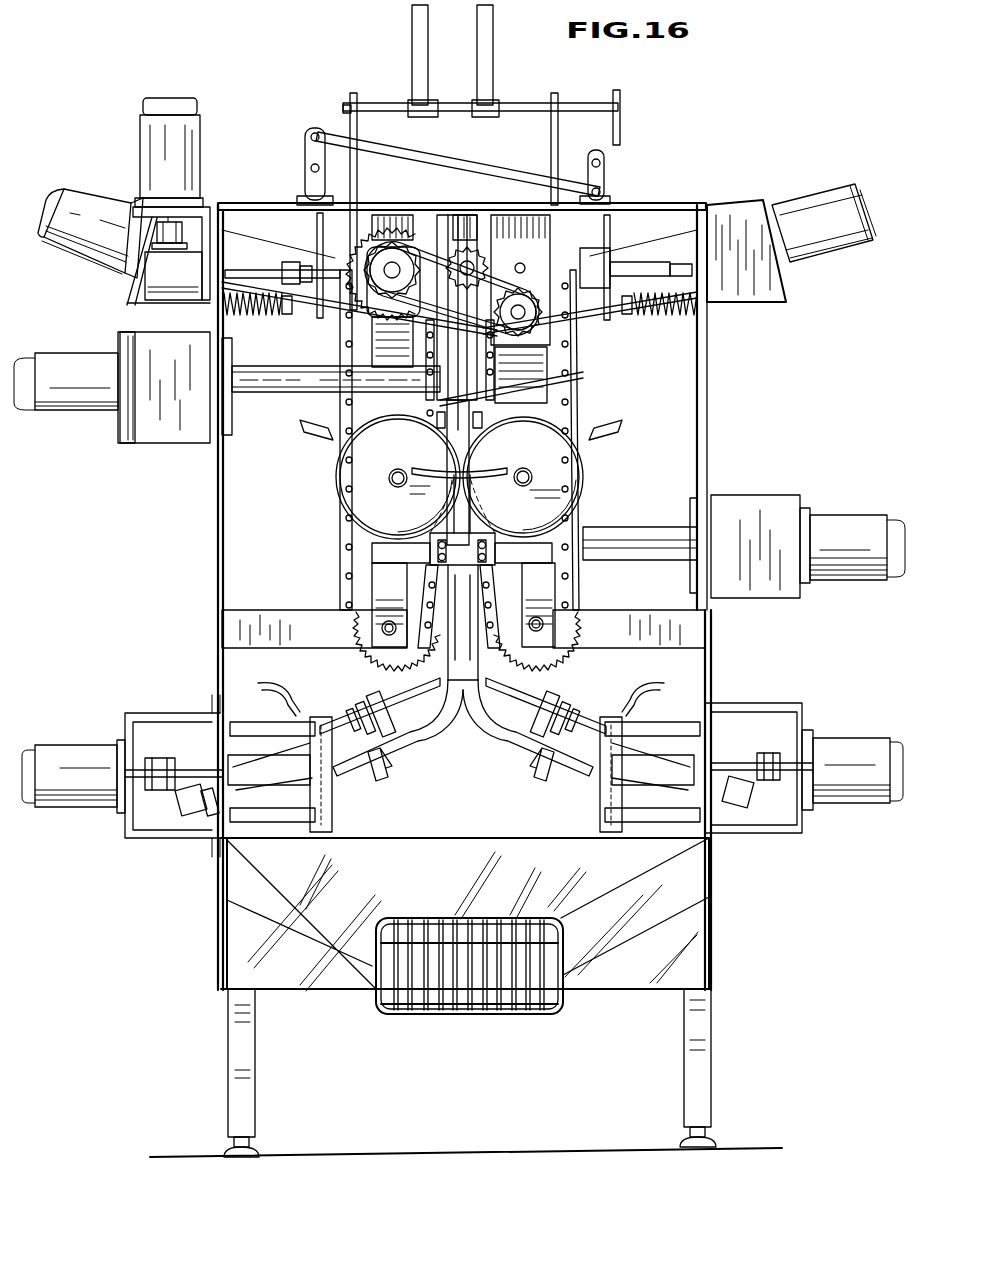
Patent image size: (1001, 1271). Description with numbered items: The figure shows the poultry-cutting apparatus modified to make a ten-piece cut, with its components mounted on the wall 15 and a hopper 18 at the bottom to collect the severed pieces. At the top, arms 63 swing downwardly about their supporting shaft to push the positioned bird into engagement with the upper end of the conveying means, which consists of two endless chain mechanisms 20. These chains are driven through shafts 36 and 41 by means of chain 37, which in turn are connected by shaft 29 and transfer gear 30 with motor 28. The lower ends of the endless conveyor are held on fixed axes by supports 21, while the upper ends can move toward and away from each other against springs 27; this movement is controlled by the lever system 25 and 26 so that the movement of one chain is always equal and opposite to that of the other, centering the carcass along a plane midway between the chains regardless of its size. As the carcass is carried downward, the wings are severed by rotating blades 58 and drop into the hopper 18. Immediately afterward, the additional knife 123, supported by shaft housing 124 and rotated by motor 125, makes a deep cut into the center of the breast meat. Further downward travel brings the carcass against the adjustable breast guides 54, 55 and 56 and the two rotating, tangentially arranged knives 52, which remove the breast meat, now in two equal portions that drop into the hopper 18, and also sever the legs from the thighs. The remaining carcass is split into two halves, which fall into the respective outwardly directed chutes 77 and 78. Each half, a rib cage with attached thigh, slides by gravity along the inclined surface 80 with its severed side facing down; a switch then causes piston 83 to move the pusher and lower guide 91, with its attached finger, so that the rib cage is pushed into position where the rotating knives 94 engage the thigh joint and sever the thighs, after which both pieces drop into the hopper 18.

The wall 15 is at (218, 520).
The hopper 18 is at (448, 873).
The endless chain mechanisms 20 is at (581, 402).
The supports 21 is at (300, 610).
The lever system 25 is at (305, 150).
The lever system 26 is at (488, 170).
The springs 27 is at (272, 316).
The motor 28 is at (203, 165).
The shaft 29 is at (245, 268).
The transfer gear 30 is at (145, 285).
The shaft 36 is at (360, 318).
The chain 37 is at (410, 325).
The shaft 41 is at (520, 263).
The rotating knives 52 is at (387, 520).
The adjustable breast guide 54 is at (447, 530).
The adjustable breast guide 55 is at (533, 553).
The adjustable breast guide 56 is at (500, 465).
The rotating blades 58 is at (428, 340).
The arms 63 is at (477, 40).
The chute 77 is at (435, 735).
The chute 78 is at (502, 737).
The inclined surface 80 is at (342, 763).
The piston 83 is at (463, 677).
The lower guide 91 is at (387, 760).
The rotating knives 94 is at (333, 797).
The knife 123 is at (520, 388).
The shaft housing 124 is at (290, 393).
The motor 125 is at (75, 352).